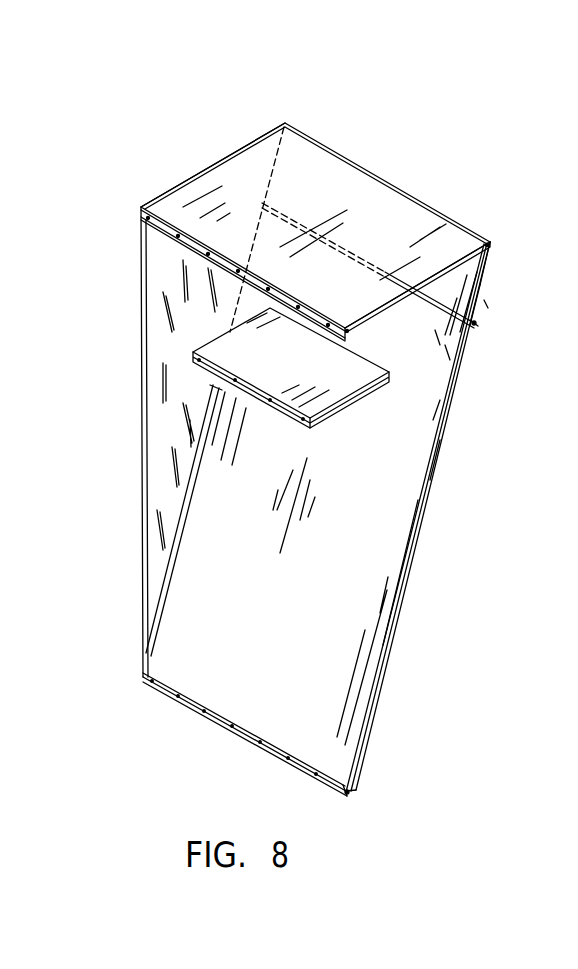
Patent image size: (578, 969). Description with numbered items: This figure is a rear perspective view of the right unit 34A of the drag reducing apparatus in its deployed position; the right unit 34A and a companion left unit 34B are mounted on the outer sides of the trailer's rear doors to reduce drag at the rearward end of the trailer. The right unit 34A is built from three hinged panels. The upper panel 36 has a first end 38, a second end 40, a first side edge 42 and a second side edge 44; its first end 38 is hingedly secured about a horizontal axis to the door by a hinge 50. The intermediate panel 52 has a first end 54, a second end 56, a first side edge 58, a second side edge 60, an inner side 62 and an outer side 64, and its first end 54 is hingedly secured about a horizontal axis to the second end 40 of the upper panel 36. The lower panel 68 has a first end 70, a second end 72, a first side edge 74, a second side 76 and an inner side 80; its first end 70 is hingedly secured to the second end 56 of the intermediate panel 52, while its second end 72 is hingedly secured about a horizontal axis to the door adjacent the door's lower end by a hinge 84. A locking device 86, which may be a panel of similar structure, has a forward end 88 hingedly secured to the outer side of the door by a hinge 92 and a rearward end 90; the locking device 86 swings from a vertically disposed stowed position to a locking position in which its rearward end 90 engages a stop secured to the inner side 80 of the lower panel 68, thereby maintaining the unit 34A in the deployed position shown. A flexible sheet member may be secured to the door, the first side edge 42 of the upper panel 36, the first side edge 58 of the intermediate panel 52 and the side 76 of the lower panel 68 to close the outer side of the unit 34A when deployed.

The upper panel 36 is at (352, 186).
The first end 38 is at (169, 222).
The second side edge 44 is at (197, 187).
The first side edge 42 is at (445, 265).
The second end 40 is at (428, 213).
The second side edge 60 is at (267, 175).
The first side edge 58 is at (480, 296).
The right unit 34A is at (126, 468).
The left unit 34B is at (456, 190).
The hinge 84 is at (295, 767).
The second end 72 is at (349, 791).
The hinge 50 is at (214, 266).
The first side edge 74 is at (183, 522).
The hinge 92 is at (220, 410).
The inner side 80 is at (338, 570).
The second side 76 is at (417, 570).
The lower panel 68 is at (478, 457).
The first end 54 is at (493, 243).
The intermediate panel 52 is at (510, 280).
The outer side 64 is at (487, 304).
The second end 56 is at (475, 324).
The first end 70 is at (440, 291).
The inner side 62 is at (447, 352).
The rearward end 90 is at (391, 372).
The locking device 86 is at (255, 376).
The forward end 88 is at (290, 407).